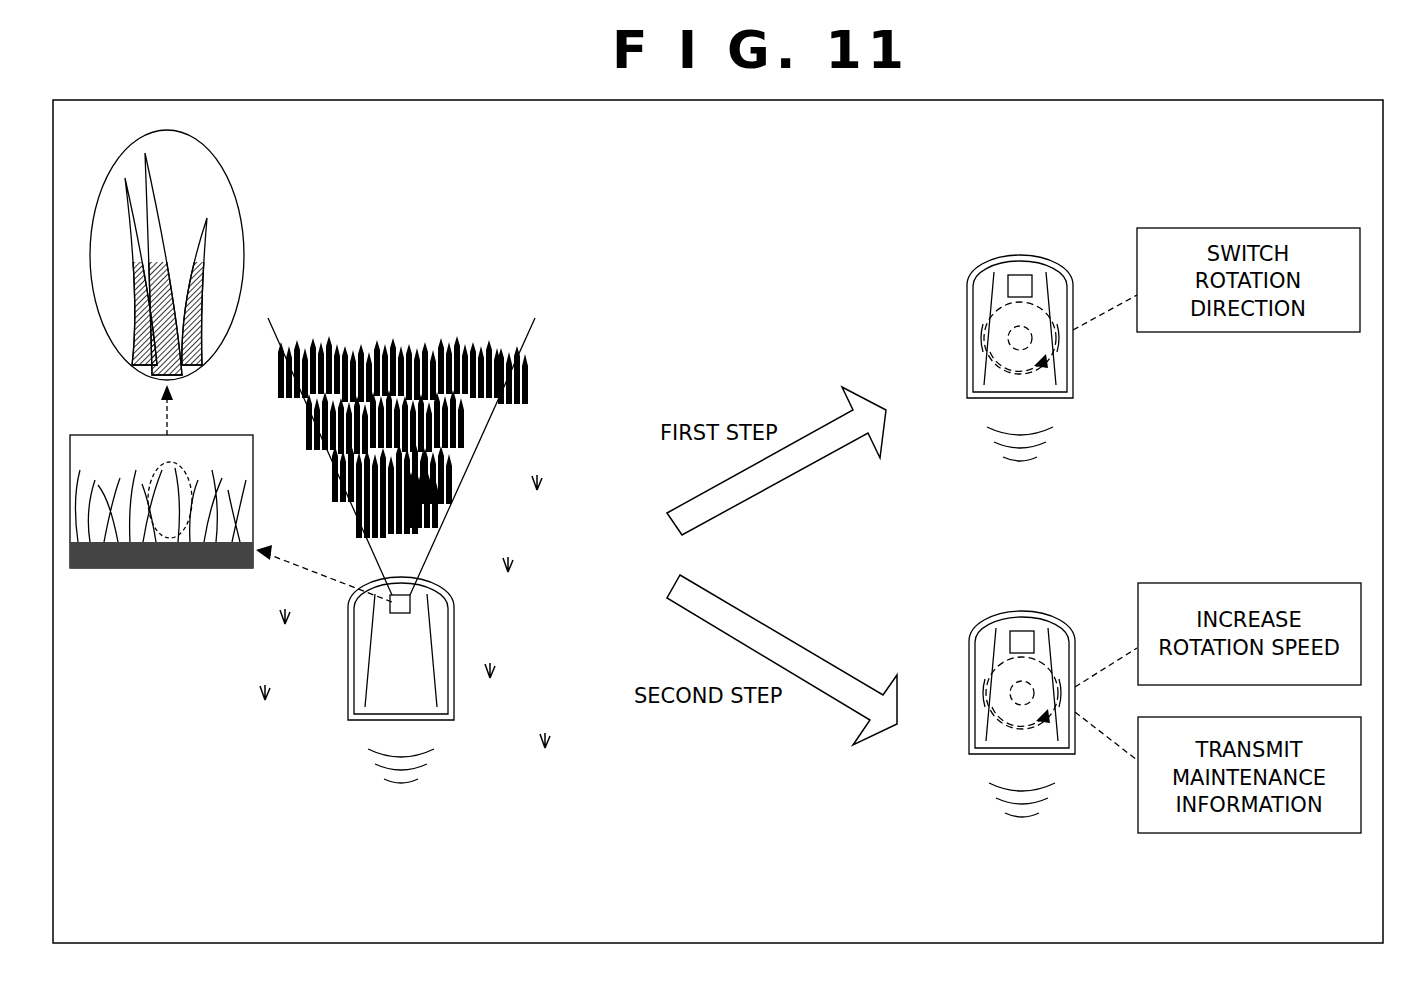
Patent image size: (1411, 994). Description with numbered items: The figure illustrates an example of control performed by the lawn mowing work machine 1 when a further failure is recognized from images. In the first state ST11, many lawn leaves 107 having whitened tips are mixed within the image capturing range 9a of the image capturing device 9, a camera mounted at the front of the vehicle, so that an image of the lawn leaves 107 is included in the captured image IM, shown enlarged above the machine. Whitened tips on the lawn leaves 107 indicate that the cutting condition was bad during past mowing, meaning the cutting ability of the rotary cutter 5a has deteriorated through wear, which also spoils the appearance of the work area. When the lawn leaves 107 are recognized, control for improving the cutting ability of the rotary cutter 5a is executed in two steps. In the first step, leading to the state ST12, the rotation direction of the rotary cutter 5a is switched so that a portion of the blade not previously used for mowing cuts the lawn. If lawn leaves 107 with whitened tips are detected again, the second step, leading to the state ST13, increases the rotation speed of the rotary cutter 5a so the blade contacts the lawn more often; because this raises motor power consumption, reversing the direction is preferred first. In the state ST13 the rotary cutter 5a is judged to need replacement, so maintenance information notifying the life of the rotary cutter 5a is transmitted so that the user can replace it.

The lawn mower 1 is at (368, 722).
The image capturing device 9 is at (400, 613).
The image capturing range 9a is at (518, 356).
The rotary cutter 5a is at (984, 336).
The lawn leaves 107 is at (205, 262).
The captured image IM is at (228, 436).
The state ST11 is at (404, 824).
The state ST12 is at (1016, 486).
The state ST13 is at (1019, 836).